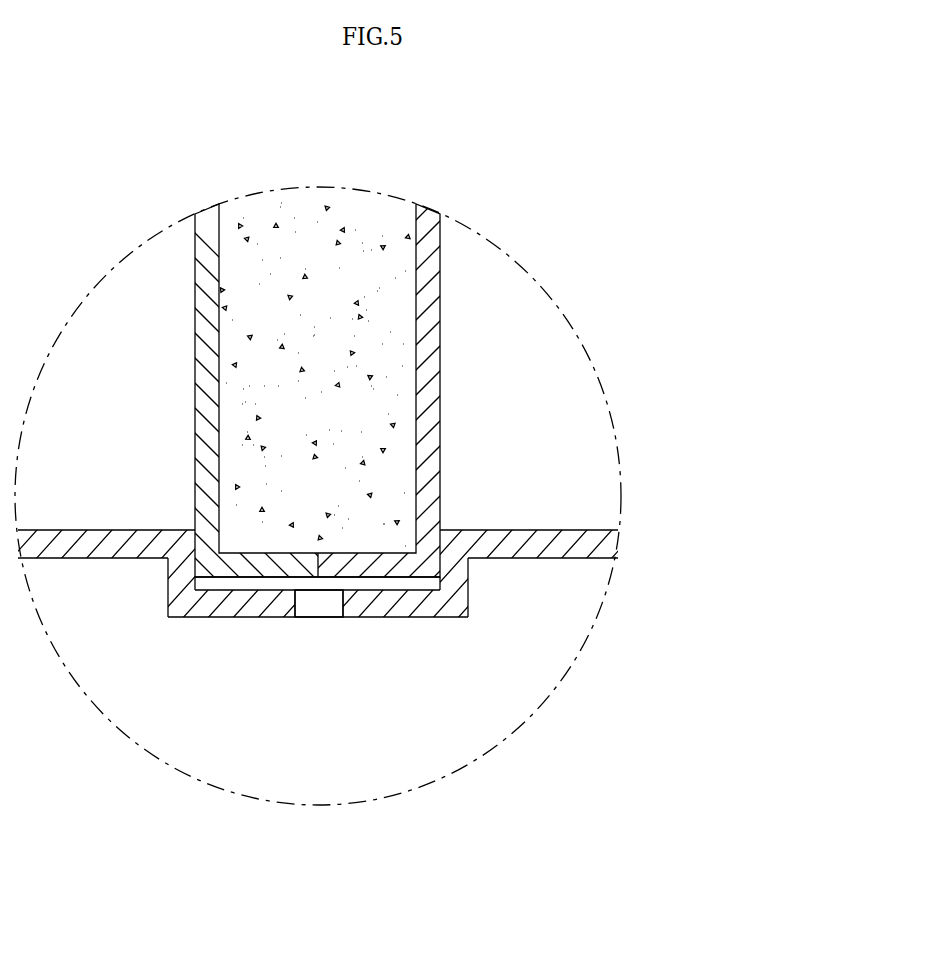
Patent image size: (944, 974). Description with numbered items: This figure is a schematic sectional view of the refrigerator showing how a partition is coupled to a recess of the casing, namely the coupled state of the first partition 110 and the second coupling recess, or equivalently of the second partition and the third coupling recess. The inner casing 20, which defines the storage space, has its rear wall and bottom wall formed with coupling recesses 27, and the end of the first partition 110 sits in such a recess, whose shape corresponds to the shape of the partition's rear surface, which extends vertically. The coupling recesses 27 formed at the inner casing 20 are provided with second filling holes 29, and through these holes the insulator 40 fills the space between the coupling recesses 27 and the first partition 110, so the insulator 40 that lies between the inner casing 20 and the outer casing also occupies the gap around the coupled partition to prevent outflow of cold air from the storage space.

The inner casing 20 is at (552, 530).
The coupling recesses 27 is at (221, 582).
The second filling holes 29 is at (332, 617).
The insulator 40 is at (383, 518).
The first partition 110 is at (452, 342).